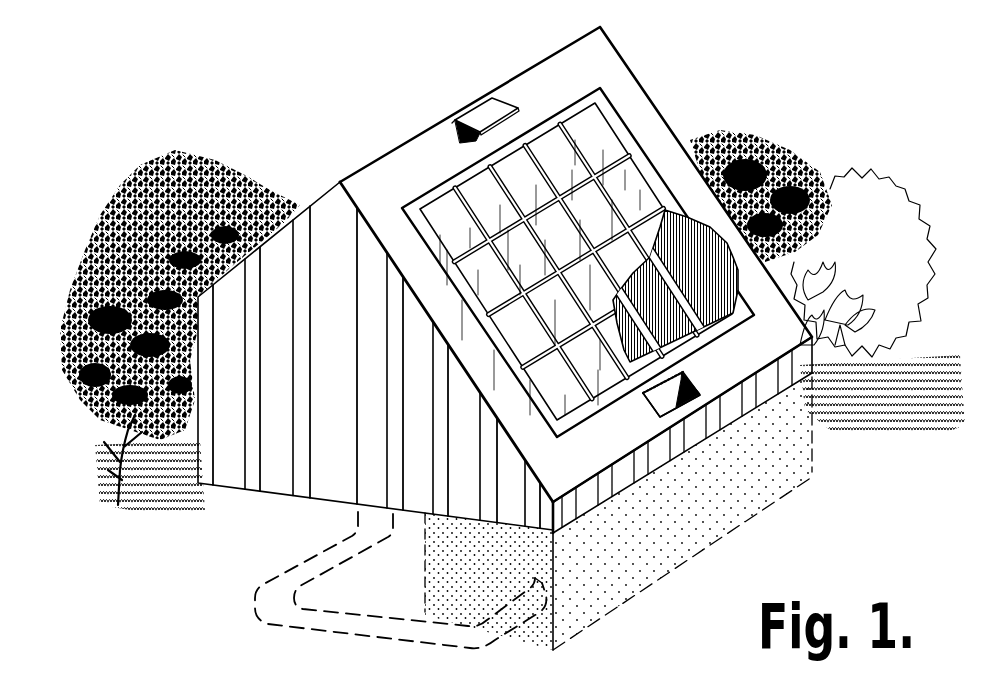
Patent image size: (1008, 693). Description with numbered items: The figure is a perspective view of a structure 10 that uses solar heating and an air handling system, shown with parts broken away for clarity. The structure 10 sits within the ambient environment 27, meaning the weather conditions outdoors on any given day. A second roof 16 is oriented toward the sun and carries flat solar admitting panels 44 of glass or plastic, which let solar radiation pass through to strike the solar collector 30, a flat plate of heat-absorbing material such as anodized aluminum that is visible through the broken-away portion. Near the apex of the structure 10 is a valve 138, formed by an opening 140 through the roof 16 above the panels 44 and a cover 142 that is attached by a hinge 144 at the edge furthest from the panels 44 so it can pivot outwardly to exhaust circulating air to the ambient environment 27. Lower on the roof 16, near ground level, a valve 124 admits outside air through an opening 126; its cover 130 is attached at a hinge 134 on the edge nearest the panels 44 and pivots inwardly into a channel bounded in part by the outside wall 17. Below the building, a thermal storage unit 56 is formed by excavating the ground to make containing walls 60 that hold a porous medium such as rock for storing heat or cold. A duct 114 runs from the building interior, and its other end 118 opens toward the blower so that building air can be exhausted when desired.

The structure 10 is at (472, 33).
The ambient environment 27 is at (297, 120).
The valve 138 is at (458, 78).
The cover 142 is at (478, 113).
The hinge 144 is at (455, 121).
The opening 140 is at (463, 144).
The solar admitting panels 44 is at (531, 191).
The solar collector 30 is at (668, 211).
The valve 124 is at (688, 362).
The opening 126 is at (694, 380).
The hinge 134 is at (648, 394).
The cover 130 is at (660, 418).
The second roof 16 is at (577, 471).
The outside wall 17 is at (664, 448).
The containing walls 60 is at (672, 538).
The thermal storage unit 56 is at (818, 452).
The duct 114 is at (372, 641).
The other end 118 is at (523, 613).